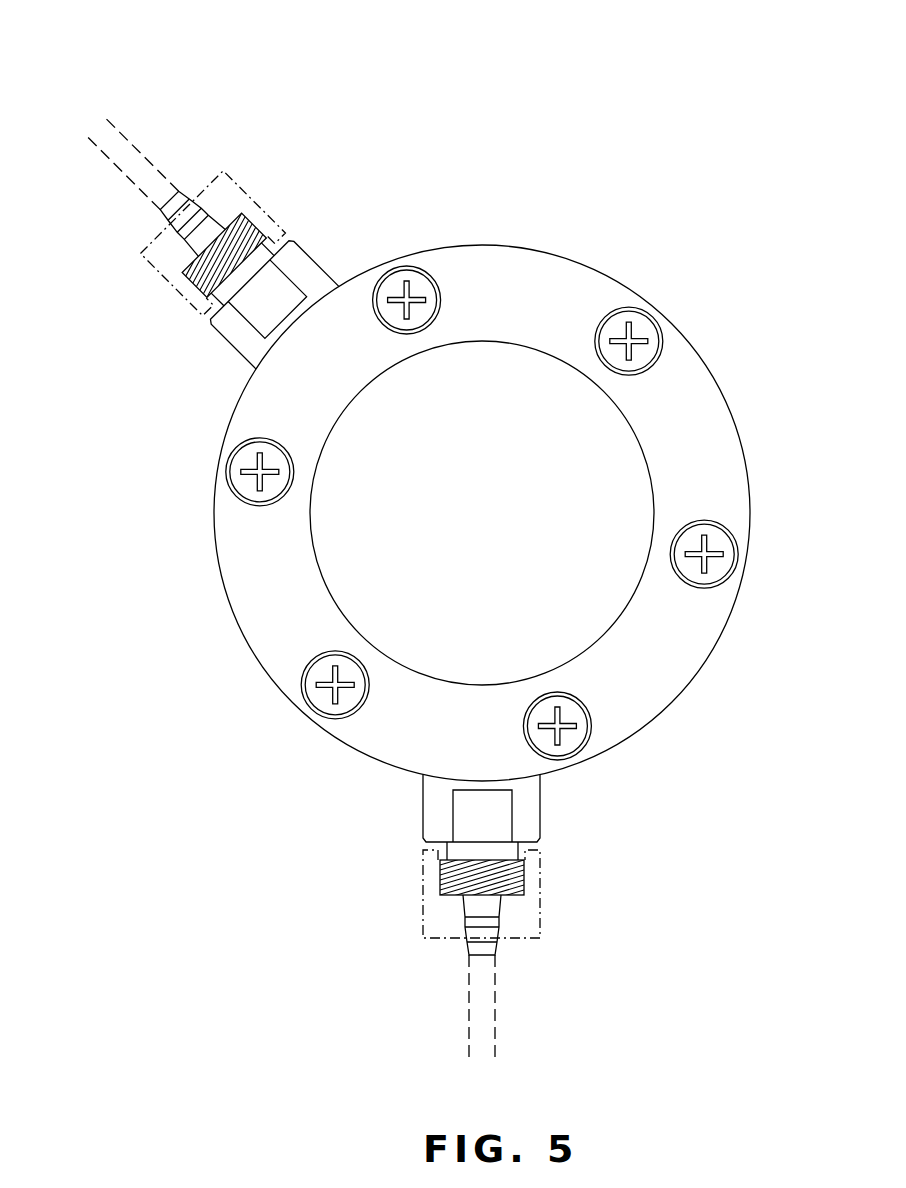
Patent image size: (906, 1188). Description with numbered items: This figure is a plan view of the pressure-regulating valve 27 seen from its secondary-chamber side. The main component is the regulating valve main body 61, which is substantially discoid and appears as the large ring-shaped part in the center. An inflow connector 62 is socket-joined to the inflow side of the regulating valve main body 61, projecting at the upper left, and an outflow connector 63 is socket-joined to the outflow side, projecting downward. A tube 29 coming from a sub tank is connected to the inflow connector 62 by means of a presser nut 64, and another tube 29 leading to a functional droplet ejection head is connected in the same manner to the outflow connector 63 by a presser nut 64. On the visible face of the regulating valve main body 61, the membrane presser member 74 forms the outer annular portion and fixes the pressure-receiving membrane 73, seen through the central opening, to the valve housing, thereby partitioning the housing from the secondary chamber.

The pressure-regulating valve 27 is at (435, 539).
The regulating valve main body 61 is at (471, 443).
The inflow connector 62 is at (115, 332).
The outflow connector 63 is at (394, 896).
The presser nut 64 is at (540, 885).
The tube 29 is at (495, 1003).
The pressure-receiving membrane 73 is at (602, 445).
The membrane presser member 74 is at (257, 570).